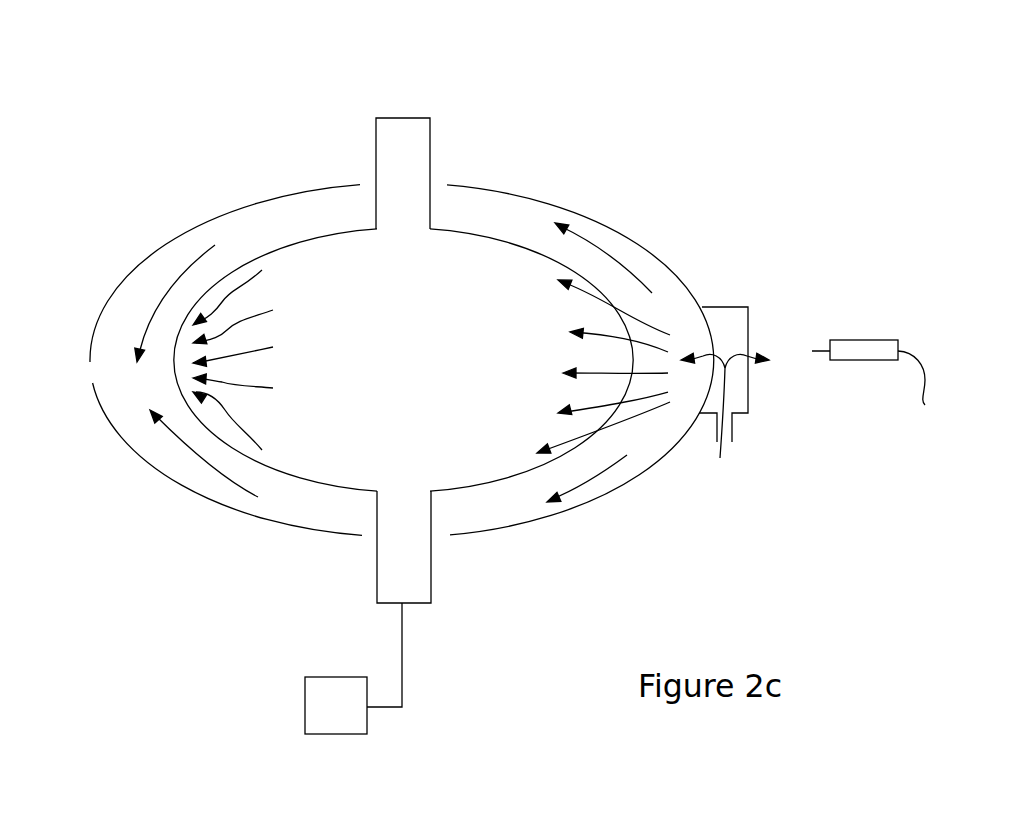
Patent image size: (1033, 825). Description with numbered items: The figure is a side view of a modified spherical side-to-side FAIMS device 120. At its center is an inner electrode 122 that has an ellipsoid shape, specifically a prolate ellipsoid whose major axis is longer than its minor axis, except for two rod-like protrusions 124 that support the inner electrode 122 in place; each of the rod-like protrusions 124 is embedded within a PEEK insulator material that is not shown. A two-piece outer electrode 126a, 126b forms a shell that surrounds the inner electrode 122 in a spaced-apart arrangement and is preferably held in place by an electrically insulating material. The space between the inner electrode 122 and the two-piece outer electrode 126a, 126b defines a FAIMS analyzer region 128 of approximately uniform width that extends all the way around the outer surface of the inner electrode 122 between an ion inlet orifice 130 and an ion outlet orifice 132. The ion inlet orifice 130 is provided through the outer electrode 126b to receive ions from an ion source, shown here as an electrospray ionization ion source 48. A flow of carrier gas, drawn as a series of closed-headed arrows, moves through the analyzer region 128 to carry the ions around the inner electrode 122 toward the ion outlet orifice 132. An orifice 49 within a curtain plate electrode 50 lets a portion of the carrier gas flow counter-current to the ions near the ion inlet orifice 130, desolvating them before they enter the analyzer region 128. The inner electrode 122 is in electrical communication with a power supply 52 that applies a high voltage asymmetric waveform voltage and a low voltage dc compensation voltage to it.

The modified spherical side-to-side FAIMS device 120 is at (724, 73).
The inner electrode 122 is at (360, 490).
The rod-like protrusions 124 is at (430, 135).
The outer electrode piece 126a is at (262, 200).
The outer electrode piece 126b is at (602, 220).
The FAIMS analyzer region 128 is at (585, 495).
The ion inlet orifice 130 is at (713, 348).
The ion outlet orifice 132 is at (88, 371).
The curtain plate electrode 50 is at (750, 325).
The orifice 49 is at (748, 353).
The electrospray ionization ion source 48 is at (868, 362).
The power supply 52 is at (305, 717).